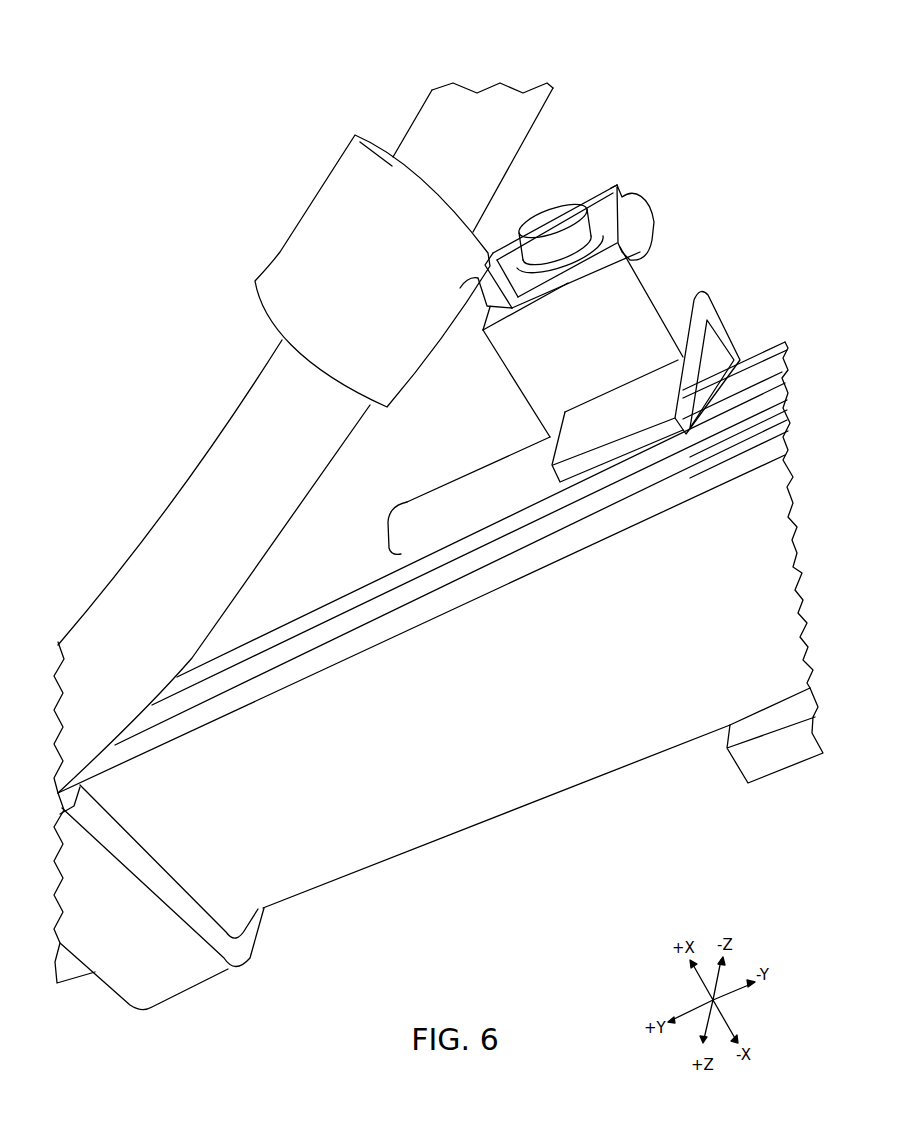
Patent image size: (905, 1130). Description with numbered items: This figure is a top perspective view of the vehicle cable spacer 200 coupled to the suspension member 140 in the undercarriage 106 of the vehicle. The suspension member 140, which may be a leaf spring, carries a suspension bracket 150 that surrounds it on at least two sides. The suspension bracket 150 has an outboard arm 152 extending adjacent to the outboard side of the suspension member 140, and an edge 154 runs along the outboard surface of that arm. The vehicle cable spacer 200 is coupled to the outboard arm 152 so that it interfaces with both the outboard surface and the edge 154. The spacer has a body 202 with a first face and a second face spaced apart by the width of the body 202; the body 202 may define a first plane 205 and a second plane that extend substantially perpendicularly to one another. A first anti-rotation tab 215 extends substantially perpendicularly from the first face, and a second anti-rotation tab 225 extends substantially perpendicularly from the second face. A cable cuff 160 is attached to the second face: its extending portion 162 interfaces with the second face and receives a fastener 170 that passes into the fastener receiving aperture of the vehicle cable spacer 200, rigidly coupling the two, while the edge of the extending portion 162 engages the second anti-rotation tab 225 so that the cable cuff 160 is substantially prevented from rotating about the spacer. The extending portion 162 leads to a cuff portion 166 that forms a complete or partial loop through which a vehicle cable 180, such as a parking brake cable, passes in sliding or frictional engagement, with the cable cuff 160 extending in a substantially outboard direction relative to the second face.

The undercarriage 106 is at (682, 80).
The suspension member 140 is at (533, 840).
The suspension bracket 150 is at (732, 335).
The outboard arm 152 is at (653, 386).
The edge 154 is at (469, 486).
The cable cuff 160 is at (584, 218).
The extending portion 162 is at (652, 212).
The cuff portion 166 is at (311, 215).
The fastener 170 is at (570, 196).
The vehicle cable 180 is at (193, 465).
The vehicle cable spacer 200 is at (609, 283).
The body 202 is at (677, 287).
The first plane 205 is at (511, 380).
The first anti-rotation tab 215 is at (550, 437).
The second anti-rotation tab 225 is at (617, 186).